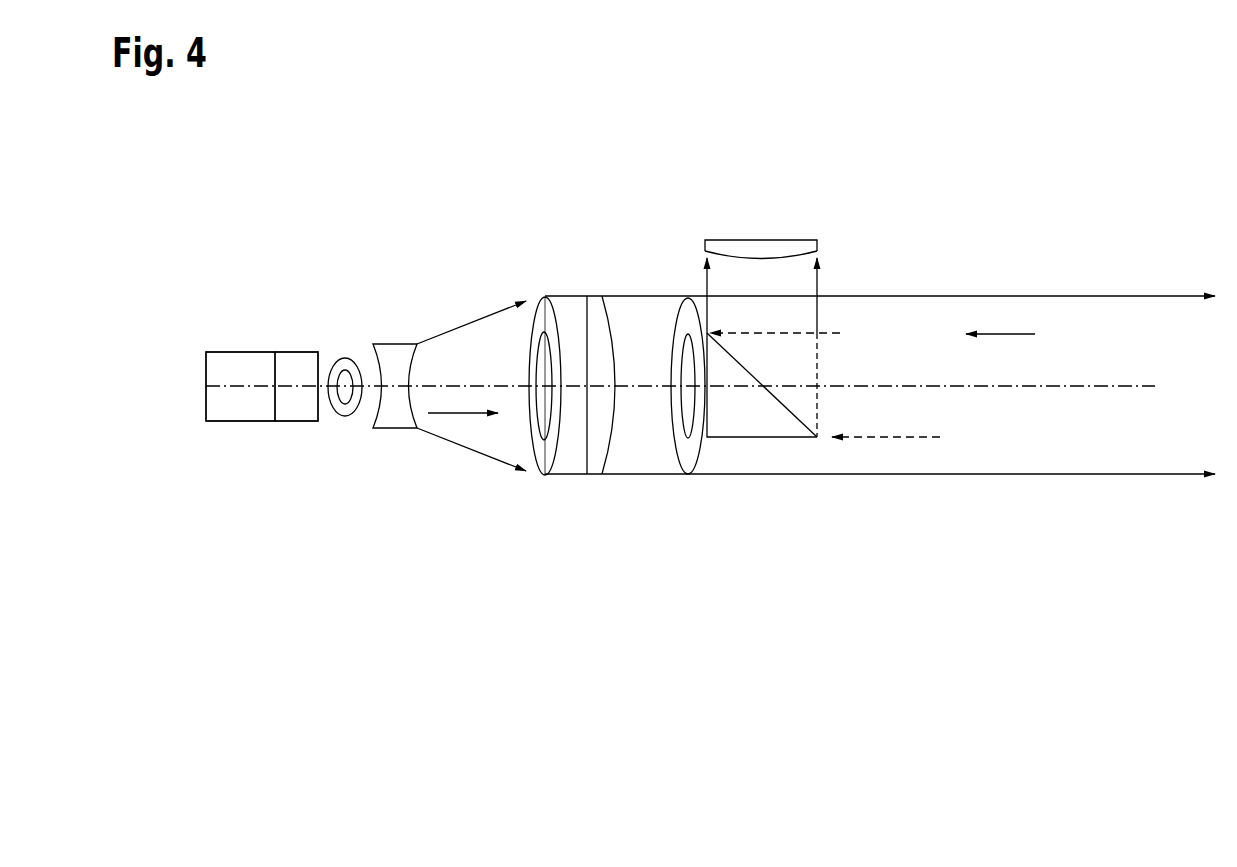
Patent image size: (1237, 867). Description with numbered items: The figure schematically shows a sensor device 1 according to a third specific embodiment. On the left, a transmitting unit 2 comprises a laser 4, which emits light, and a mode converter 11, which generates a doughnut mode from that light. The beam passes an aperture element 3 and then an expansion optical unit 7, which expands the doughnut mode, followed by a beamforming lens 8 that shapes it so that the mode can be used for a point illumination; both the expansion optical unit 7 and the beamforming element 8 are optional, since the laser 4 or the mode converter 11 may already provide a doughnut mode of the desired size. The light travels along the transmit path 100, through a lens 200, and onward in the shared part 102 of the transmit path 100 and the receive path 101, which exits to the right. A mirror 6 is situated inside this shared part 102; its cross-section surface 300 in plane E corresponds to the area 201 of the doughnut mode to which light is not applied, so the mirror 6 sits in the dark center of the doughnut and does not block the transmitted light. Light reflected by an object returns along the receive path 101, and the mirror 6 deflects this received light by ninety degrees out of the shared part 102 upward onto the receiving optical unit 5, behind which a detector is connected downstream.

The sensor device 1 is at (1148, 207).
The transmitting unit 2 is at (302, 262).
The aperture 3 is at (345, 357).
The laser 4 is at (228, 351).
The receiving optical unit 5 is at (752, 236).
The mirror 6 is at (770, 425).
The expansion optical unit 7 is at (394, 343).
The beamforming lens 8 is at (613, 446).
The mode converter 11 is at (287, 351).
The transmit path 100 is at (462, 418).
The receive path 101 is at (1035, 334).
The shared part of transmit path and receive path 102 is at (872, 505).
The first lens 200 is at (550, 315).
The area of the doughnut mode to which light is not applied 201 is at (536, 370).
The cross-section surface 300 is at (708, 410).
The plane E is at (545, 480).